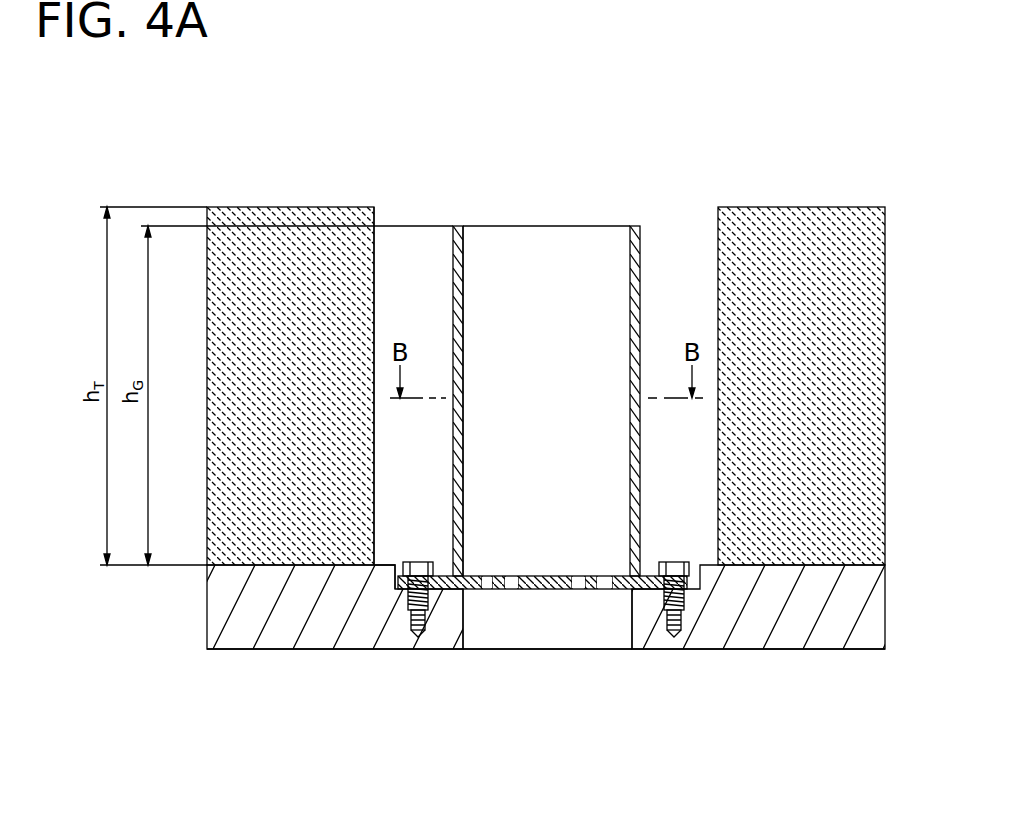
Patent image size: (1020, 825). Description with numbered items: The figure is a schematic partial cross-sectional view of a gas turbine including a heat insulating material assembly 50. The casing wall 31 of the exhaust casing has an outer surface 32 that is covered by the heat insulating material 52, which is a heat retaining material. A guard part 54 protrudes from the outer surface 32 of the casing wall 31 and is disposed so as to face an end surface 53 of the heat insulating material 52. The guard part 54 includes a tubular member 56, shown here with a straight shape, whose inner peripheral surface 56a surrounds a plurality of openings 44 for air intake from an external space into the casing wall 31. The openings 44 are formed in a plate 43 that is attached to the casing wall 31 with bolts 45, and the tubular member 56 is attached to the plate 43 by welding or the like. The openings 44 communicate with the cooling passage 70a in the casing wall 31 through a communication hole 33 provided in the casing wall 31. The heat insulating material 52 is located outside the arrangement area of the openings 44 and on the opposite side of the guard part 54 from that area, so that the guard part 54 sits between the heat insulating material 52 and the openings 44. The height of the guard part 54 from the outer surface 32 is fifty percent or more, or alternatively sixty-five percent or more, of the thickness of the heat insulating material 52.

The casing wall 31 is at (278, 637).
The outer surface 32 is at (381, 564).
The communication hole 33 is at (464, 622).
The plate 43 is at (442, 590).
The openings 44 is at (484, 590).
The bolts 45 is at (418, 561).
The heat insulating material assembly 50 is at (546, 388).
The heat insulating material 52 is at (286, 207).
The end surface 53 is at (375, 279).
The guard part 54 is at (578, 350).
The tubular member 56 is at (641, 281).
The inner peripheral surface 56a is at (464, 355).
The substrate 70a is at (728, 712).